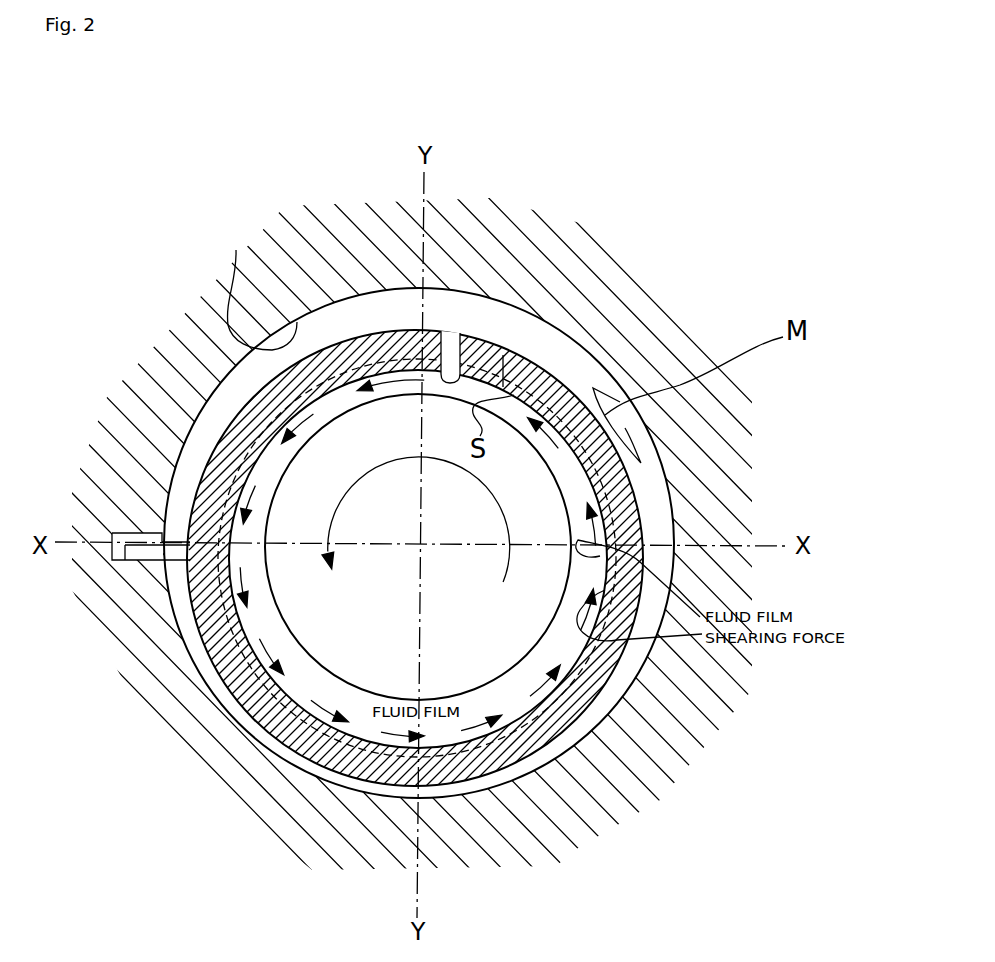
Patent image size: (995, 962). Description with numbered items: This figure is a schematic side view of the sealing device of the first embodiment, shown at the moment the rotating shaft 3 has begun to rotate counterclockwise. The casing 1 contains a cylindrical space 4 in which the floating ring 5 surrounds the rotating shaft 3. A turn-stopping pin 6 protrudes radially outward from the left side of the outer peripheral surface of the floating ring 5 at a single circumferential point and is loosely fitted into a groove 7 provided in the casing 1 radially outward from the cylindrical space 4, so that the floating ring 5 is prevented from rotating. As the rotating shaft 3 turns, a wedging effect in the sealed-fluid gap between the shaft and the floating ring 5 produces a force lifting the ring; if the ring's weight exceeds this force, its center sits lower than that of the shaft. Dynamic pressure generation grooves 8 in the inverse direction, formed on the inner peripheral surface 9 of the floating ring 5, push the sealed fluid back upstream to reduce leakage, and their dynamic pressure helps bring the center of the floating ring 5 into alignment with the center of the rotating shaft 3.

The casing 1 is at (372, 222).
The rotating shaft 3 is at (438, 643).
The cylindrical space 4 is at (236, 250).
The floating ring 5 is at (627, 523).
The turn-stopping pin 6 is at (150, 552).
The groove 7 is at (122, 533).
The dynamic pressure generation groove in the inverse direction 8 is at (503, 362).
The inner peripheral surface of the floating ring 9 is at (461, 342).